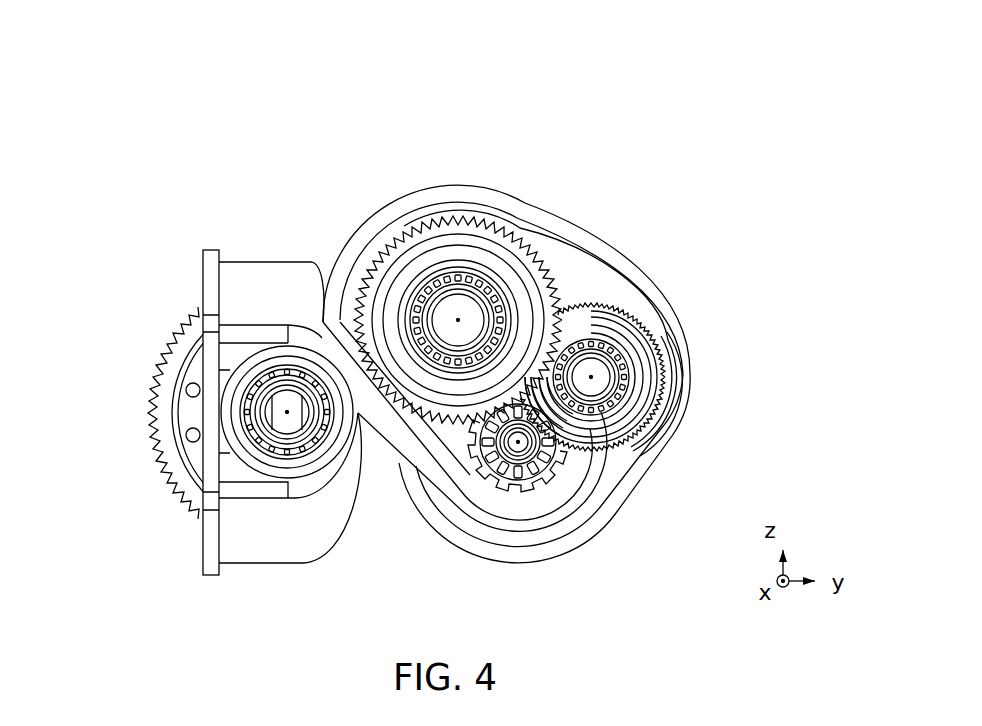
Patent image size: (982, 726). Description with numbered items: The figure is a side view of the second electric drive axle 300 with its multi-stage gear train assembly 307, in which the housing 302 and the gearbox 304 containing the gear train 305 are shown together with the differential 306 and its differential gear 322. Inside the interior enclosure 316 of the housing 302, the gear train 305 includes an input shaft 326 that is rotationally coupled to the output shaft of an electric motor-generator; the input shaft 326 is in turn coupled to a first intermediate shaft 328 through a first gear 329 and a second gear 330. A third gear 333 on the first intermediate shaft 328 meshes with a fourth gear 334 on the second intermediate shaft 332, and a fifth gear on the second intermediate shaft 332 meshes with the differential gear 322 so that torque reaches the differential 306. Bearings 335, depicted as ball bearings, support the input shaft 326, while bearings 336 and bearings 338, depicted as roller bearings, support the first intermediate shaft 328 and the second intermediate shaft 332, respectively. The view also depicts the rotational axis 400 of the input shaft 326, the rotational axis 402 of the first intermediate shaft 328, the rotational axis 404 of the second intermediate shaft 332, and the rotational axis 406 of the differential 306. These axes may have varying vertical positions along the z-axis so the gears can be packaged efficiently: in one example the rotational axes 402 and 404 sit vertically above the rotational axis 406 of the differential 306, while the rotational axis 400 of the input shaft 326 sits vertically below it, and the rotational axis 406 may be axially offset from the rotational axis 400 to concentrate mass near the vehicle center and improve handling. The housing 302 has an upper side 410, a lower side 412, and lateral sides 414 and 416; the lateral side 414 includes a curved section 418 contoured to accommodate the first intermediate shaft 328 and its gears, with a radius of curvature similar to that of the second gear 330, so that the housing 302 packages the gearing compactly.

The second electric drive axle 300 is at (805, 134).
The housing 302 is at (535, 397).
The gearbox 304 is at (604, 285).
The gear train 305 is at (606, 282).
The differential 306 is at (183, 296).
The multi-stage gear train assembly 307 is at (770, 232).
The interior enclosure 316 is at (438, 466).
The differential gear 322 is at (150, 385).
The input shaft 326 is at (507, 460).
The first intermediate shaft 328 is at (618, 370).
The first gear 329 is at (563, 485).
The second gear 330 is at (663, 393).
The second intermediate shaft 332 is at (458, 318).
The third gear 333 is at (622, 438).
The fourth gear 334 is at (379, 233).
The bearings 335 is at (554, 457).
The bearings 336 is at (618, 341).
The bearings 338 is at (566, 262).
The rotational axis of the input shaft 400 is at (518, 445).
The rotational axis of the first intermediate shaft 402 is at (648, 408).
The rotational axis of the second intermediate shaft 404 is at (466, 287).
The rotational axis of the differential 406 is at (287, 413).
The upper side 410 is at (503, 170).
The lower side 412 is at (488, 572).
The lateral side 414 is at (702, 335).
The lateral side 416 is at (312, 297).
The curved section 418 is at (684, 373).